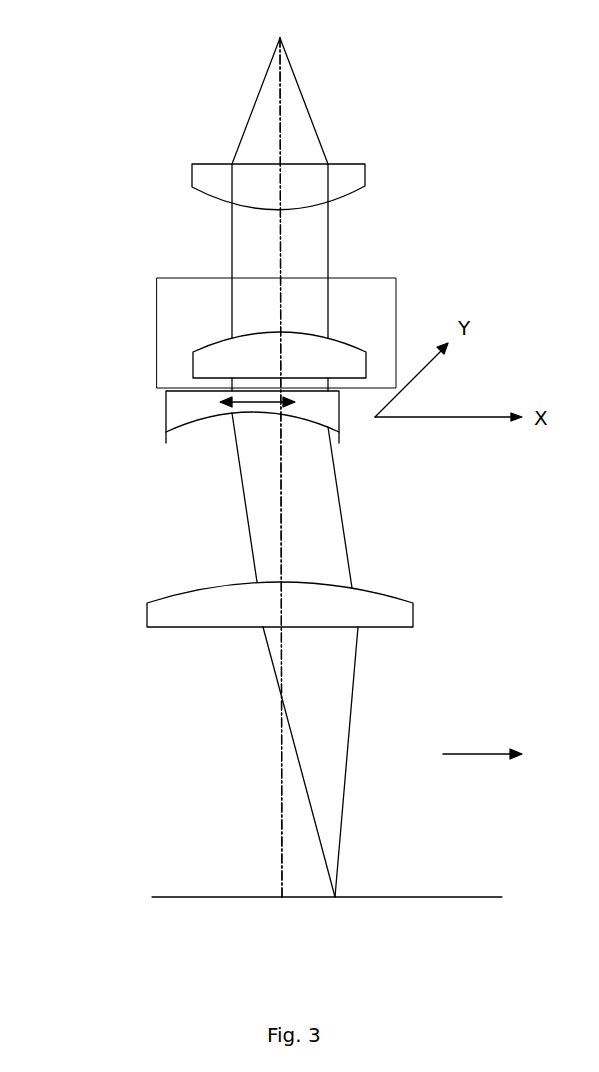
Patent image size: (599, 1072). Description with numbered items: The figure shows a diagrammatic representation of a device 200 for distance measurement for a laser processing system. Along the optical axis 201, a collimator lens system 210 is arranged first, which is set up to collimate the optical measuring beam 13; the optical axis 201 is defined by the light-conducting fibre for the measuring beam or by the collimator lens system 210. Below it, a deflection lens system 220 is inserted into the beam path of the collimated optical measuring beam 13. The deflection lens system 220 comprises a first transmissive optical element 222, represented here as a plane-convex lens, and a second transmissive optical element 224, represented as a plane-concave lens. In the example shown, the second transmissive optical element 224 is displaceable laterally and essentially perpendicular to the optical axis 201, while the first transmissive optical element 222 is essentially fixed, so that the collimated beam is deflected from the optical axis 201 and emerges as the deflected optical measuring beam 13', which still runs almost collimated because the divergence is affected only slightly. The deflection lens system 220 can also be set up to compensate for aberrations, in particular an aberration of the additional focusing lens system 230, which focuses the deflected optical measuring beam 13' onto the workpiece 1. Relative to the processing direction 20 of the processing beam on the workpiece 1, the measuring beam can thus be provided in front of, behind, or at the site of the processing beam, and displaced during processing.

The device for the distance measurement 200 is at (508, 59).
The optical axis 201 is at (281, 812).
The optical measuring beam 13 is at (343, 214).
The deflected optical measuring beam 13' is at (354, 655).
The collimator lens system 210 is at (366, 180).
The deflection lens system 220 is at (162, 308).
The first transmissive optical element 222 is at (193, 350).
The second transmissive optical element 224 is at (166, 410).
The focusing lens system 230 is at (413, 612).
The workpiece 1 is at (385, 897).
The processing direction 20 is at (480, 756).